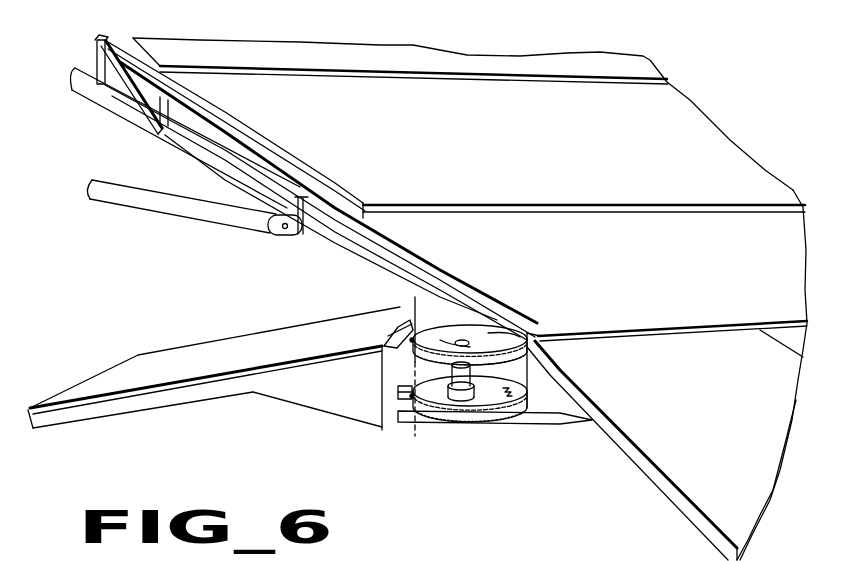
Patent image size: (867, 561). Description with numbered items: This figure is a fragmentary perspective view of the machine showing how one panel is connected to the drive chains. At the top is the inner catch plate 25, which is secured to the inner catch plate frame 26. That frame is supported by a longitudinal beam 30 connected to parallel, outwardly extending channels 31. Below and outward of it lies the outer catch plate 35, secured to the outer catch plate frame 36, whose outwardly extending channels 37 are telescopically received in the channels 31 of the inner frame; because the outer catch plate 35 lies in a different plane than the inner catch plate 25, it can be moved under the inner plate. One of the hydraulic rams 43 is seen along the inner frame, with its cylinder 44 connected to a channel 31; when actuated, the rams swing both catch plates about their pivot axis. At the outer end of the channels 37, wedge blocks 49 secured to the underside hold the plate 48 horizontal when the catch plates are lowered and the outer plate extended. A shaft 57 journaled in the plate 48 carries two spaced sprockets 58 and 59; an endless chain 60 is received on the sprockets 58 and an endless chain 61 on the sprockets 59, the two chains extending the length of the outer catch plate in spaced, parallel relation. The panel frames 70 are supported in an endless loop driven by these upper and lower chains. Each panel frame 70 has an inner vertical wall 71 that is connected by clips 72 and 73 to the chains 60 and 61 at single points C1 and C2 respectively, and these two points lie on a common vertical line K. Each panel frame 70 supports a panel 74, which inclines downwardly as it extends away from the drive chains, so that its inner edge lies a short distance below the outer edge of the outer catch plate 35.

The inner catch plate 25 is at (471, 146).
The inner catch plate frame 26 is at (242, 150).
The longitudinal beam 30 is at (178, 110).
The channels 31 is at (112, 110).
The outer catch plate 35 is at (695, 276).
The outer catch plate frame 36 is at (352, 246).
The channels 37 is at (400, 268).
The hydraulic rams 43 is at (155, 214).
The cylinder 44 is at (230, 222).
The plate 48 is at (529, 338).
The wedge blocks 49 is at (505, 334).
The shaft 57 is at (529, 370).
The sprockets 58 is at (438, 342).
The sprockets 59 is at (481, 412).
The endless chain 60 is at (478, 328).
The endless chain 61 is at (520, 425).
The panel frames 70 is at (96, 414).
The inner vertical wall 71 is at (380, 371).
The clip 72 is at (405, 328).
The clip 73 is at (397, 391).
The panel 74 is at (118, 368).
The connection point C1 is at (410, 339).
The connection point C2 is at (410, 398).
The vertical line K is at (432, 292).